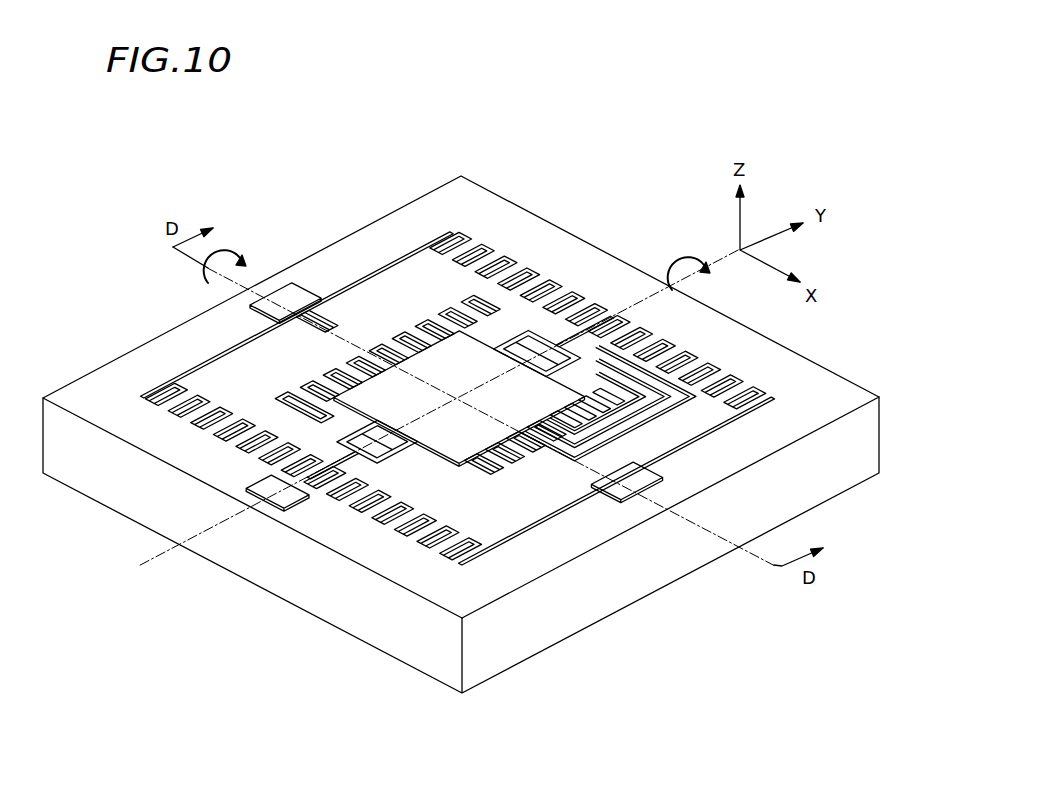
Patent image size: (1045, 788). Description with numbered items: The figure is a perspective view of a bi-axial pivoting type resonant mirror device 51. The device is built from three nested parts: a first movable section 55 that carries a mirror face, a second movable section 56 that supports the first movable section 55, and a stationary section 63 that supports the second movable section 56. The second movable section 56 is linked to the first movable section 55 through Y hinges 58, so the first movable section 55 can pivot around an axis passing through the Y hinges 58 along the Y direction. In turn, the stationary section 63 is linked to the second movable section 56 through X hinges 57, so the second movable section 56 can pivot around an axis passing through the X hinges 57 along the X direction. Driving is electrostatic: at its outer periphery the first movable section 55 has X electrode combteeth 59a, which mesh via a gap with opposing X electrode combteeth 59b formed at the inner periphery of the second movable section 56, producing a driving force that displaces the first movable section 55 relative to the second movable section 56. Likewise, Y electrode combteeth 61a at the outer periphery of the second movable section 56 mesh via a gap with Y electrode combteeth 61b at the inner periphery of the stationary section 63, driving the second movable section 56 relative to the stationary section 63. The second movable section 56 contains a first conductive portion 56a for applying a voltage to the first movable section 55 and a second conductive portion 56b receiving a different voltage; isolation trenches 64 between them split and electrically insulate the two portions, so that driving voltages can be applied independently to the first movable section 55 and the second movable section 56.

The resonant mirror device 51 is at (421, 176).
The first movable section 55 is at (473, 432).
The second movable section 56 is at (480, 518).
The first conductive portion 56a is at (700, 380).
The second conductive portion 56b is at (707, 415).
The X hinges 57 is at (302, 300).
The Y hinges 58 is at (538, 352).
The X electrode combteeth 59a is at (285, 400).
The X electrode combteeth 59b is at (458, 457).
The Y electrode combteeth 61a is at (493, 265).
The Y electrode combteeth 61b is at (192, 405).
The stationary section 63 is at (599, 272).
The isolation trenches 64 is at (673, 390).